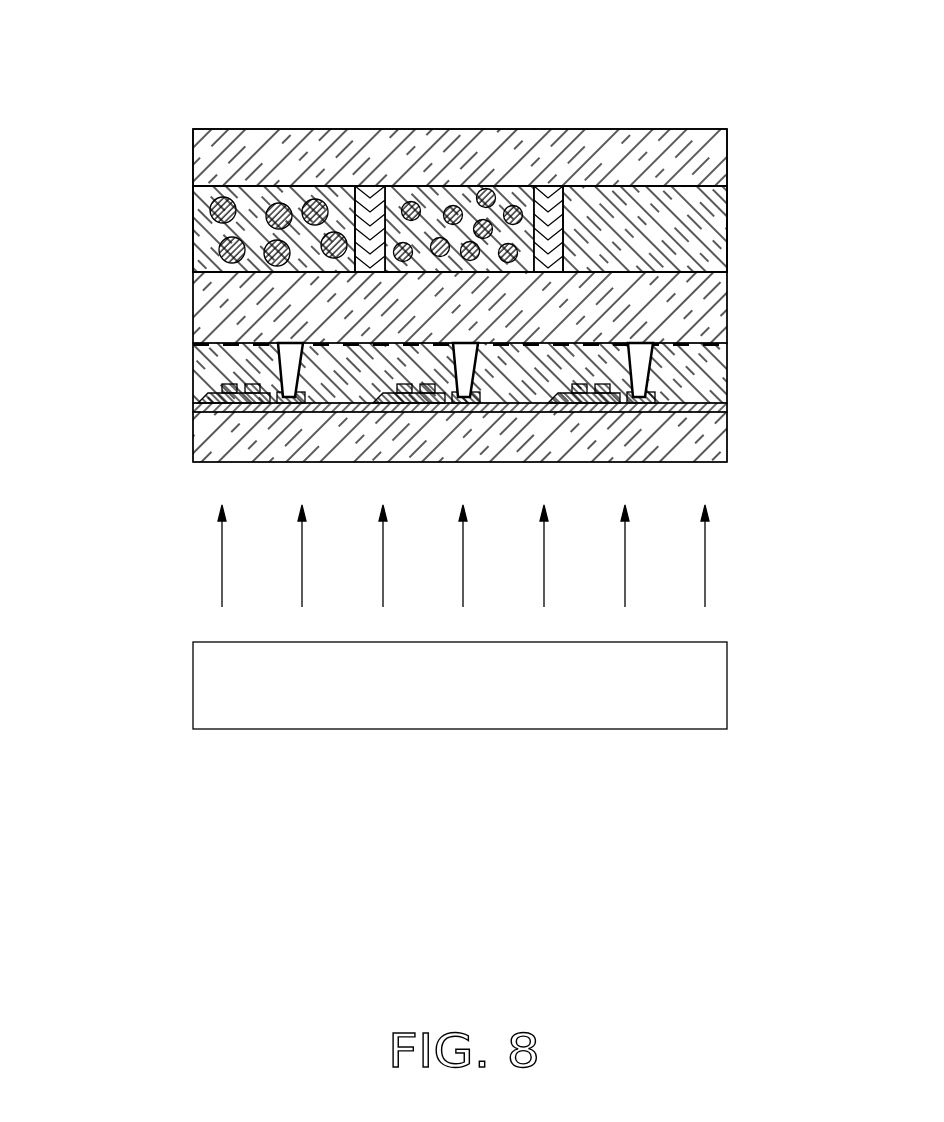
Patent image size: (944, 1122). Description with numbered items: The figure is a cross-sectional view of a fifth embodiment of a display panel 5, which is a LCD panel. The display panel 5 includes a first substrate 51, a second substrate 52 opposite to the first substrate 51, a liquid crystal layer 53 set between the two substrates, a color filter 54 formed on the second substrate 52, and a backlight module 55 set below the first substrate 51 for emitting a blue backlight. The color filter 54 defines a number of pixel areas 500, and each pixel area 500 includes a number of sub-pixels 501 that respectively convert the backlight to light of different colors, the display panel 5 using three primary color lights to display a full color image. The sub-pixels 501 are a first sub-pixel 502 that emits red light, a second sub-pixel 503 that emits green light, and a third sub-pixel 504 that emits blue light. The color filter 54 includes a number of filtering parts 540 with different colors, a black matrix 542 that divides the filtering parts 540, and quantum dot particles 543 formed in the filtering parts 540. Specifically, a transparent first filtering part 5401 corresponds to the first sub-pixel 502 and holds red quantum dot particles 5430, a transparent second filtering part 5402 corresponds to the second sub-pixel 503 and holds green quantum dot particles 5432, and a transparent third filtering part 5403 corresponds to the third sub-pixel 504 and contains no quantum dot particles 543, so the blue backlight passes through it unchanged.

The display panel 5 is at (166, 60).
The pixel area 500 is at (668, 37).
The first sub-pixel 502 is at (367, 101).
The second sub-pixel 503 is at (545, 101).
The third sub-pixel 504 is at (727, 101).
The color filter 54 is at (101, 134).
The black matrix 542 is at (347, 187).
The quantum dot particles 543 is at (200, 197).
The filtering parts 540 is at (215, 216).
The red quantum dot particles 5430 is at (216, 250).
The transparent first filtering part 5401 is at (205, 265).
The transparent second filtering part 5402 is at (415, 287).
The second substrate 52 is at (702, 157).
The transparent third filtering part 5403 is at (696, 210).
The green quantum dot particles 5432 is at (503, 248).
The sub-pixels 501 is at (700, 270).
The liquid crystal layer 53 is at (705, 315).
The first substrate 51 is at (705, 445).
The backlight module 55 is at (210, 694).